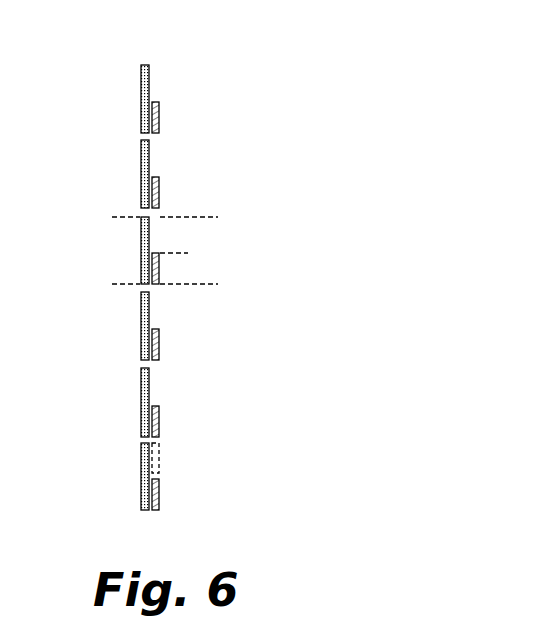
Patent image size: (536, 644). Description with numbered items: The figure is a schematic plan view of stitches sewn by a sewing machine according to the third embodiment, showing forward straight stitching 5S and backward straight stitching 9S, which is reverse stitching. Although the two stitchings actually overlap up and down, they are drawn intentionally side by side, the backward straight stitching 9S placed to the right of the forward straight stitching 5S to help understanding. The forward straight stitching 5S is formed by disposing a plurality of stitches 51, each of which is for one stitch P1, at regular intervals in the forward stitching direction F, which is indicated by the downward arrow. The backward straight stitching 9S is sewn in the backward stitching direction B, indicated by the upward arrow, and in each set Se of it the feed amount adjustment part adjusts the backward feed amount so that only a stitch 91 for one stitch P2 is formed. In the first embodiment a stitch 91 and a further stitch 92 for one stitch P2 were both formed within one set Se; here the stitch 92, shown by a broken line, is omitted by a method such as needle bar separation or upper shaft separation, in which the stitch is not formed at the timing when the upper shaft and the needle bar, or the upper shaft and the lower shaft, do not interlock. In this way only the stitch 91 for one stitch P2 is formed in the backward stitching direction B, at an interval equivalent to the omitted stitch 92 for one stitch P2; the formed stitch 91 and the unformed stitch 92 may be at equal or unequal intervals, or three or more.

The forward straight stitching 5S is at (141, 97).
The backward straight stitching 9S is at (160, 101).
The stitch 51 is at (141, 108).
The stitch 91 is at (159, 115).
The stitch 92 is at (160, 457).
The one stitch P1 is at (118, 218).
The one stitch P2 is at (185, 223).
The set Se is at (215, 218).
The forward stitching direction F is at (53, 478).
The backward stitching direction B is at (258, 508).